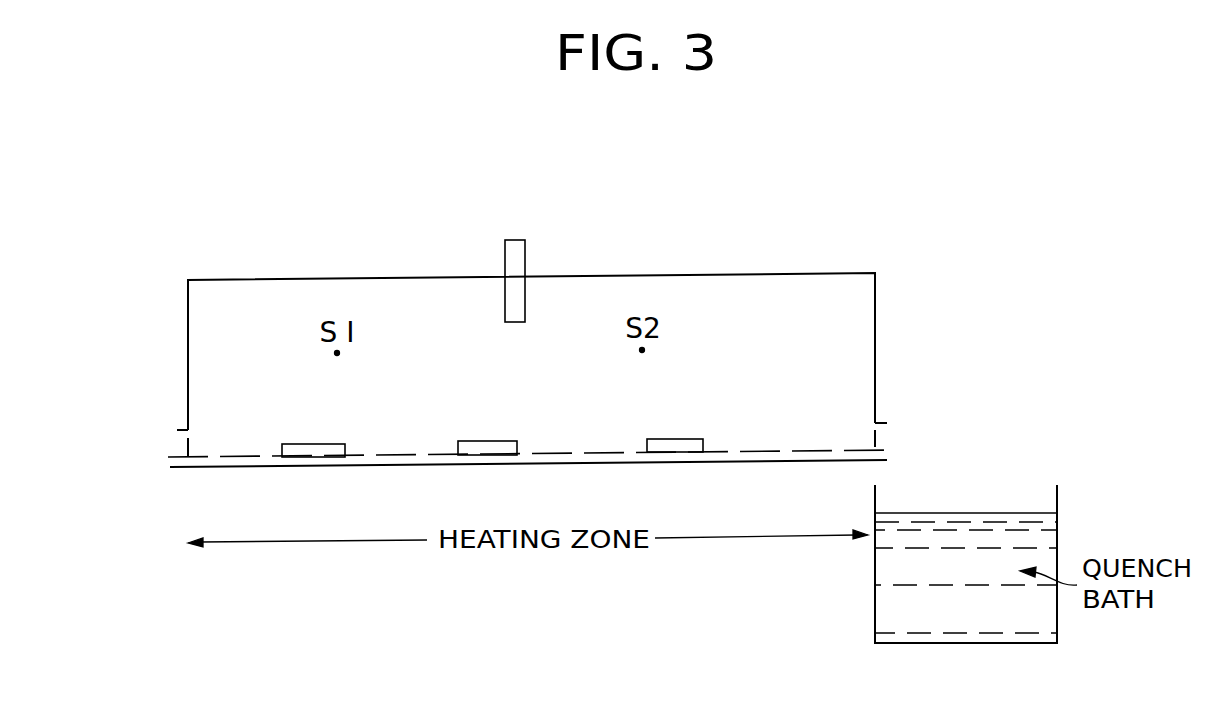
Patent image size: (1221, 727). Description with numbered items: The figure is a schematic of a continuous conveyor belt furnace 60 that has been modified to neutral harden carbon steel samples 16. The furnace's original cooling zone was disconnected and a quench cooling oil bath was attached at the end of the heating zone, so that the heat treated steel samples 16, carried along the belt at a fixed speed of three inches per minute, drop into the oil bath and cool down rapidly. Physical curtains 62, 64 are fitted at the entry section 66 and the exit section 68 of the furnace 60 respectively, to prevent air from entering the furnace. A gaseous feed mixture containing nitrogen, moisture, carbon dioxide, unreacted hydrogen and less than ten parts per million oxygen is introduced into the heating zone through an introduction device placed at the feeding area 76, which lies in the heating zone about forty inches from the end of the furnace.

The modified furnace 60 is at (364, 268).
The feeding area 76 is at (525, 258).
The entry section 66 is at (188, 338).
The exit section 68 is at (875, 343).
The physical curtain 62 is at (186, 445).
The physical curtain 64 is at (878, 437).
The steel samples 16 is at (332, 444).